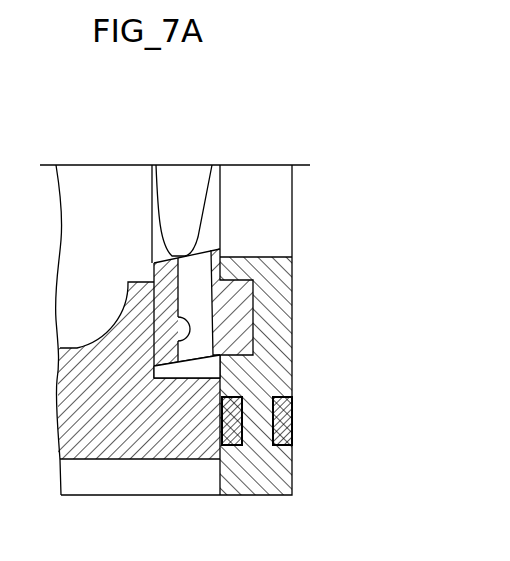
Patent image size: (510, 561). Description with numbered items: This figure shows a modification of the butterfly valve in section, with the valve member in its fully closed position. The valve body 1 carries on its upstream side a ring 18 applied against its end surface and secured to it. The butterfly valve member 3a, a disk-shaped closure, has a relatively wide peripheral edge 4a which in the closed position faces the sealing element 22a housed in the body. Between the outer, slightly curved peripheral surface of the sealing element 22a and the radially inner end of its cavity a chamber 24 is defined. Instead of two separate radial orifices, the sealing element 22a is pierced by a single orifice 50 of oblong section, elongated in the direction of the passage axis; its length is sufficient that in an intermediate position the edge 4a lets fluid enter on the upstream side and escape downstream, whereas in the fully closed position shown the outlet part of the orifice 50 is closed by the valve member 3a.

The body 1 is at (128, 436).
The butterfly valve member 3a is at (188, 197).
The edge 4a is at (153, 255).
The ring 18 is at (273, 475).
The sealing element 22a is at (237, 318).
The chamber 24 is at (185, 380).
The orifice 50 is at (177, 341).